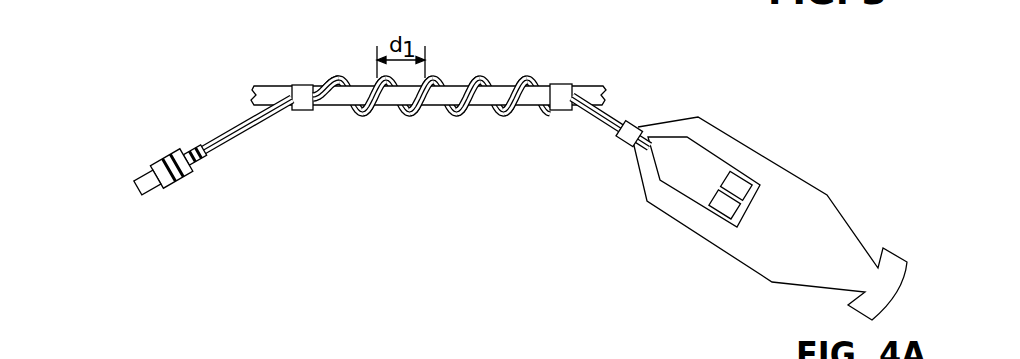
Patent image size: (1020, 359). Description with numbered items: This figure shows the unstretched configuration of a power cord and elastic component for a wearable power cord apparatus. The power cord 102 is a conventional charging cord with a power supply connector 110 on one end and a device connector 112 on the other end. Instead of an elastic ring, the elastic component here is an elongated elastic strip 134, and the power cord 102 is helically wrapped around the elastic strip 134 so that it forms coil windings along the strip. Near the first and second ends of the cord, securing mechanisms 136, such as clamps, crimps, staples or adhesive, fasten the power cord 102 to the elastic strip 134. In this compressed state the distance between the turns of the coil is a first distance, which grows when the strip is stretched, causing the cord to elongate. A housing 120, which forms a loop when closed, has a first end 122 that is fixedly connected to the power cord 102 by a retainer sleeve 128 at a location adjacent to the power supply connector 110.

In FIG. 3, the power cord 102 is at (528, 80).
In FIG. 4A, the power cord 102 is at (469, 358).
In FIG. 3, the power supply connector 110 is at (717, 163).
In FIG. 3, the device connector 112 is at (176, 184).
In FIG. 3, the housing 120 is at (798, 208).
In FIG. 3, the first end of the housing 122 is at (679, 128).
In FIG. 3, the retainer sleeve 128 is at (633, 122).
In FIG. 3, the elongated elastic strip 134 is at (355, 86).
In FIG. 4A, the elongated elastic strip 134 is at (347, 353).
In FIG. 3, the securing mechanisms 136 is at (303, 111).
In FIG. 4A, the securing mechanisms 136 is at (617, 353).